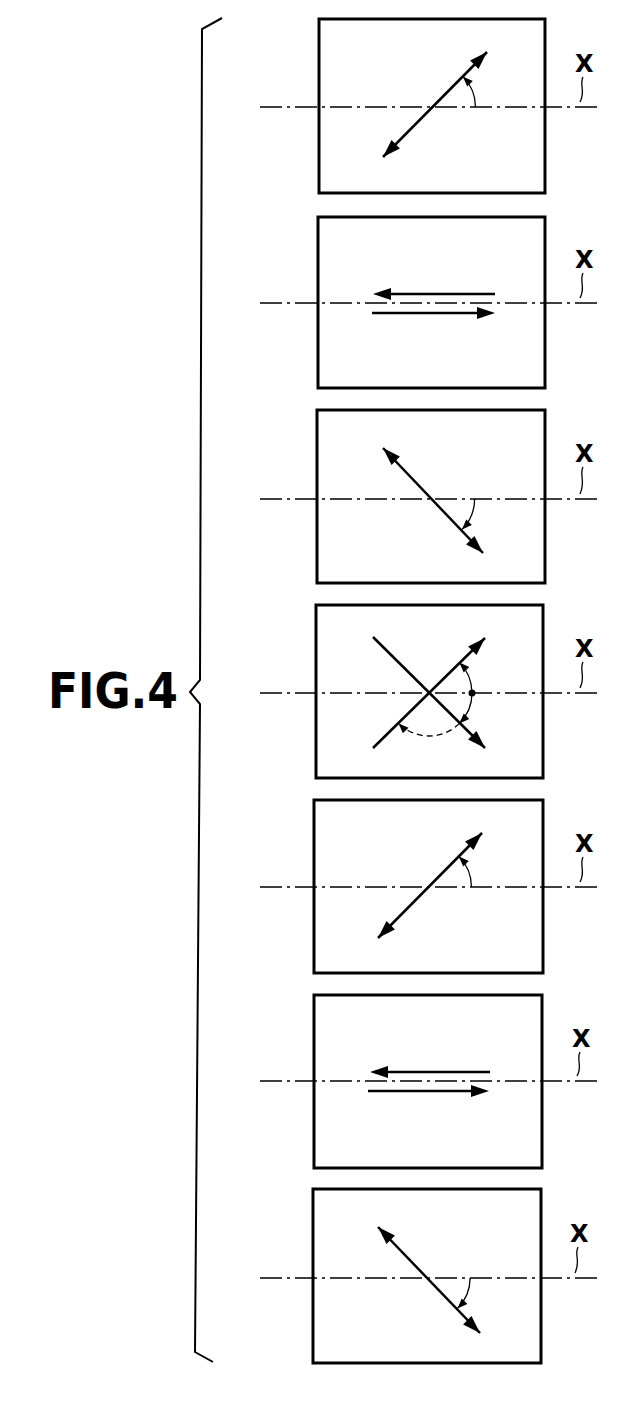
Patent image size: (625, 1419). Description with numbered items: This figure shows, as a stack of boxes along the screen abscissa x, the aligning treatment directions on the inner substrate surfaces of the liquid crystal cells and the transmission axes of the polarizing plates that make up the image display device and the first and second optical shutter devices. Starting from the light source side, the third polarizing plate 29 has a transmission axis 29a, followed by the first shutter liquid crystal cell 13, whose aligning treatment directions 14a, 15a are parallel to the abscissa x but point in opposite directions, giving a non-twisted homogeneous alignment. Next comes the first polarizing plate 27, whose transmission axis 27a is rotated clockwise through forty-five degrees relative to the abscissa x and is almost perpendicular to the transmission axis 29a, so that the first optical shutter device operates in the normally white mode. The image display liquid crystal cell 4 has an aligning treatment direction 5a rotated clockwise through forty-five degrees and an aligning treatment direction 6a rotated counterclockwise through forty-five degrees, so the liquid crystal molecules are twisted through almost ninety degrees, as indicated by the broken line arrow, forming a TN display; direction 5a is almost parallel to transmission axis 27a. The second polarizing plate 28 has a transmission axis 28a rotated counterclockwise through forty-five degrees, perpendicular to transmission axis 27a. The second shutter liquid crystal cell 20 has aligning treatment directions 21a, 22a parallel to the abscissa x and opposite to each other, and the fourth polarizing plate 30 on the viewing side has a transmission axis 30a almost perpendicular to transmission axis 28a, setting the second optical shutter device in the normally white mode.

The third polarizing plate 29 is at (319, 49).
The transmission axis 29a is at (417, 123).
The first shutter liquid crystal cell 13 is at (318, 246).
The aligning treatment direction 14a is at (433, 293).
The aligning treatment direction 15a is at (437, 317).
The first polarizing plate 27 is at (317, 441).
The transmission axis 27a is at (440, 465).
The image display liquid crystal cell 4 is at (316, 636).
The aligning treatment direction 5a is at (393, 657).
The aligning treatment direction 6a is at (395, 728).
The second polarizing plate 28 is at (314, 831).
The transmission axis 28a is at (412, 905).
The second shutter liquid crystal cell 20 is at (314, 1024).
The aligning treatment direction 21a is at (430, 1070).
The aligning treatment direction 22a is at (433, 1095).
The fourth polarizing plate 30 is at (313, 1219).
The transmission axis 30a is at (435, 1243).